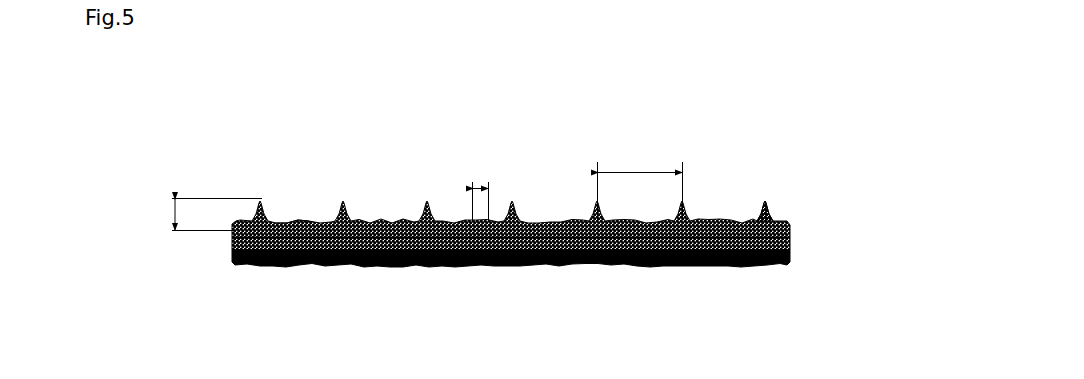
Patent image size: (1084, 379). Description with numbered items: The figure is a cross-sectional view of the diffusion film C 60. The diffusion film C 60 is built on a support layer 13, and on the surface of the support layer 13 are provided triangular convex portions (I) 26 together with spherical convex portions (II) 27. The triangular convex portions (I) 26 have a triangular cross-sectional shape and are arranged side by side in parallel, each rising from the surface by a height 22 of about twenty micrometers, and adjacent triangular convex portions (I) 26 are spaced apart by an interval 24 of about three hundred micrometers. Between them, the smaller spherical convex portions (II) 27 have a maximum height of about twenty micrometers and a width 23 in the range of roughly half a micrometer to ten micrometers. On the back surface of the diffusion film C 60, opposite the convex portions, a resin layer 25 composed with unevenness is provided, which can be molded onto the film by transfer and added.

The diffusion film C 60 is at (767, 115).
The support layer 13 is at (792, 245).
The resin layer 25 is at (720, 263).
The triangular convex portion (I) 26 is at (763, 206).
The spherical convex portion (II) 27 is at (291, 220).
The height of the convex portion (I) 22 is at (186, 216).
The width 23 is at (480, 186).
The interval 24 is at (640, 182).